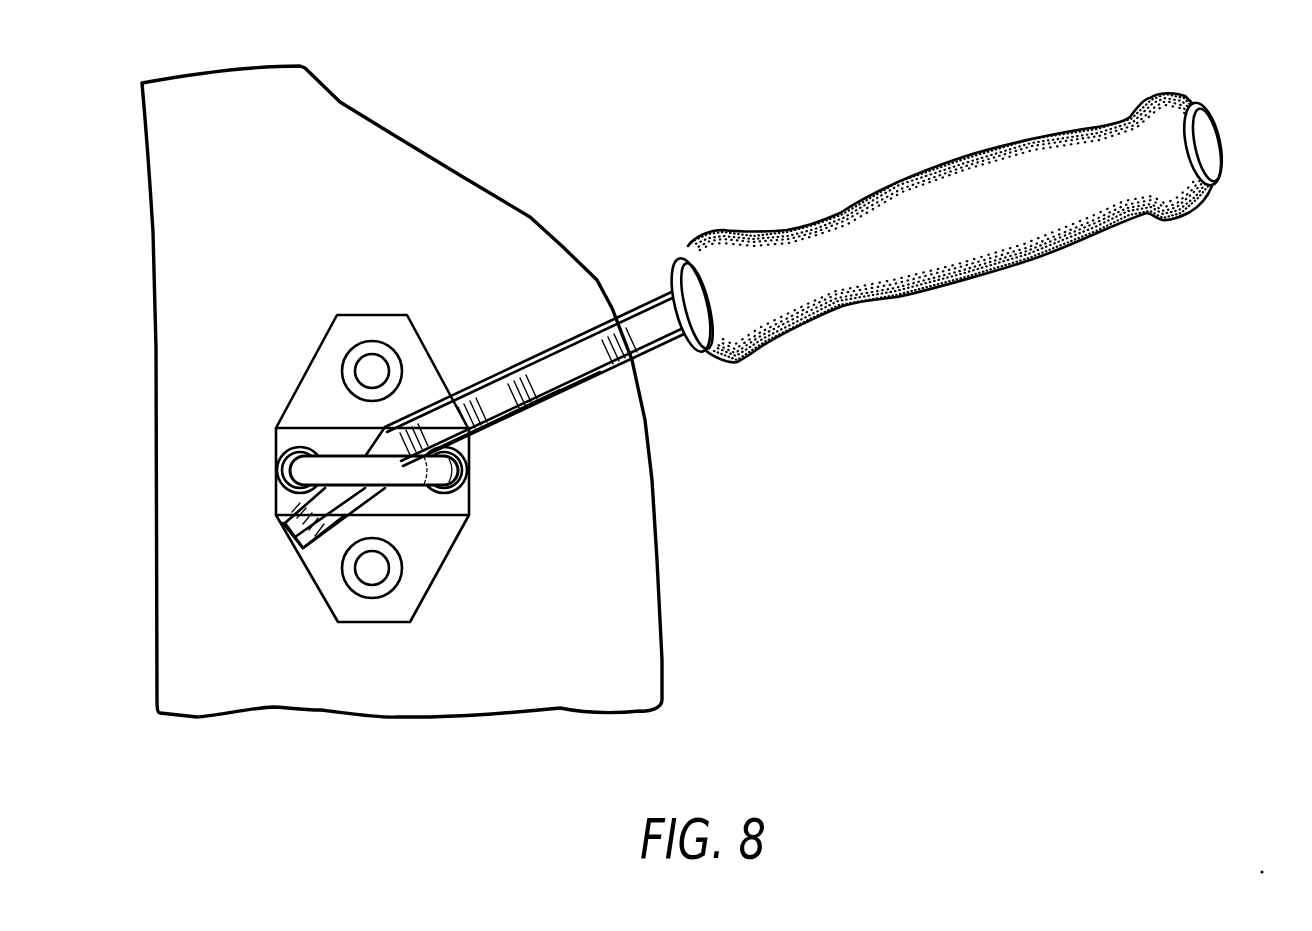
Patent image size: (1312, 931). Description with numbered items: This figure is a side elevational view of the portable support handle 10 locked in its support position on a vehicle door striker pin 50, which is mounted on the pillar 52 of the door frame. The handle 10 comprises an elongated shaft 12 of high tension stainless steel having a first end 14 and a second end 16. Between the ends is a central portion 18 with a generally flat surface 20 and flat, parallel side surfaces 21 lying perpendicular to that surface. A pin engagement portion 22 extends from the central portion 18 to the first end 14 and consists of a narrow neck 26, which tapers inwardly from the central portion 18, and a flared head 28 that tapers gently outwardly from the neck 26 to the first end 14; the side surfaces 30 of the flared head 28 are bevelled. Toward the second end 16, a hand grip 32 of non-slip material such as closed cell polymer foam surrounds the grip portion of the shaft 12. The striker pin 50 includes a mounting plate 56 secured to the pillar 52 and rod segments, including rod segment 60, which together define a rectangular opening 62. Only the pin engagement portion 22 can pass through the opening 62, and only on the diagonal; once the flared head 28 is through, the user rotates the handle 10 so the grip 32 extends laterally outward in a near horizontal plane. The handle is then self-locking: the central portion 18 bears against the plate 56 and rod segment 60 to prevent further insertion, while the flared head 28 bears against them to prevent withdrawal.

The portable support handle 10 is at (835, 261).
The elongated shaft 12 is at (619, 298).
The first end 14 is at (292, 541).
The second end 16 is at (1217, 138).
The central portion 18 is at (565, 396).
The flat surface 20 is at (550, 376).
The side surfaces 21 is at (595, 355).
The pin engagement portion 22 is at (363, 523).
The narrow neck 26 is at (395, 427).
The flared head 28 is at (327, 548).
The bevelled side surfaces 30 is at (295, 508).
The hand grip 32 is at (968, 230).
The door striker pin 50 is at (368, 426).
The pillar 52 is at (298, 242).
The mounting plate 56 is at (445, 530).
The rod segment 60 is at (403, 475).
The rectangular opening 62 is at (327, 443).